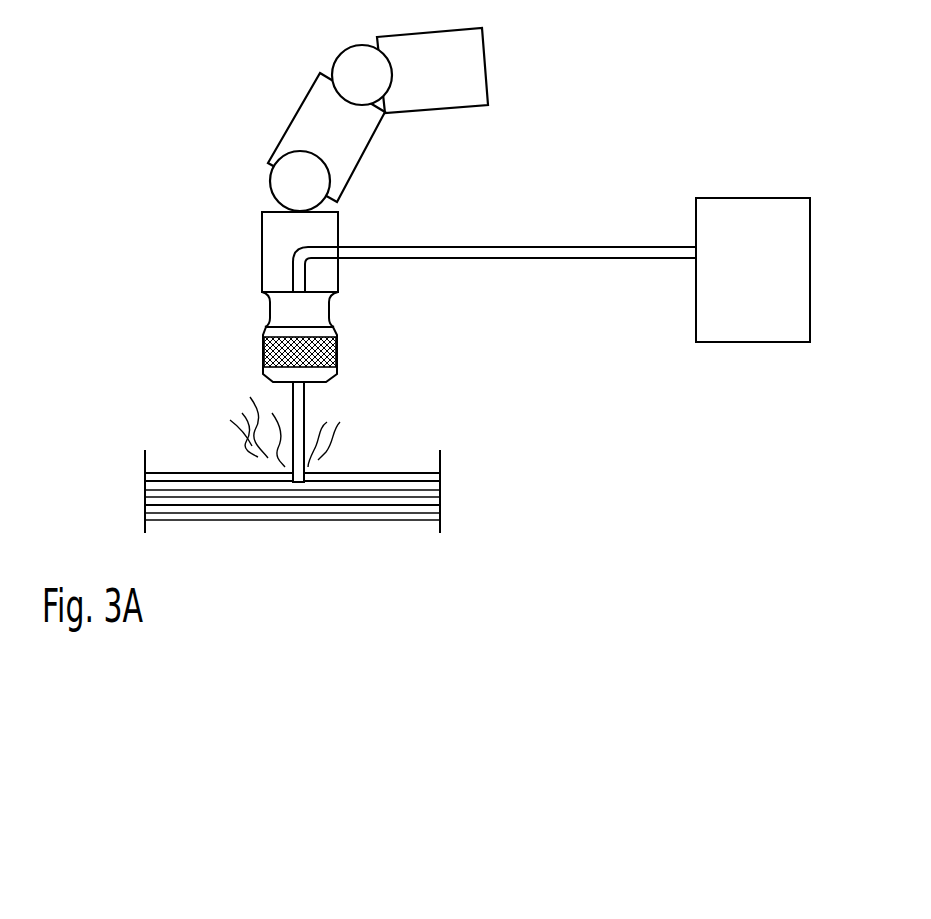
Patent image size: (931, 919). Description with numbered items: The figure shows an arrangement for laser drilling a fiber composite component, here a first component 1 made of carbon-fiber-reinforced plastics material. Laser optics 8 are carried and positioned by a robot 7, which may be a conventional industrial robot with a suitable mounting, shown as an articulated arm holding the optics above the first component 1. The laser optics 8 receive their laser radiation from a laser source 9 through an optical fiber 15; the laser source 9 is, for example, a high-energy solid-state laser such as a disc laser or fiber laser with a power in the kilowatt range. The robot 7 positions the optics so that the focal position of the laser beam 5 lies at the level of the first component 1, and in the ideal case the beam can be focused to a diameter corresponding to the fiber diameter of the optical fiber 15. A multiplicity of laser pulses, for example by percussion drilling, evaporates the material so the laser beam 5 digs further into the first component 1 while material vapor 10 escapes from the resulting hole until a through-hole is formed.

The first component 1 is at (423, 502).
The laser beam 5 is at (318, 411).
The robot 7 is at (272, 135).
The laser optics 8 is at (333, 354).
The laser source 9 is at (755, 210).
The material vapor 10 is at (236, 443).
The optical fiber 15 is at (617, 243).